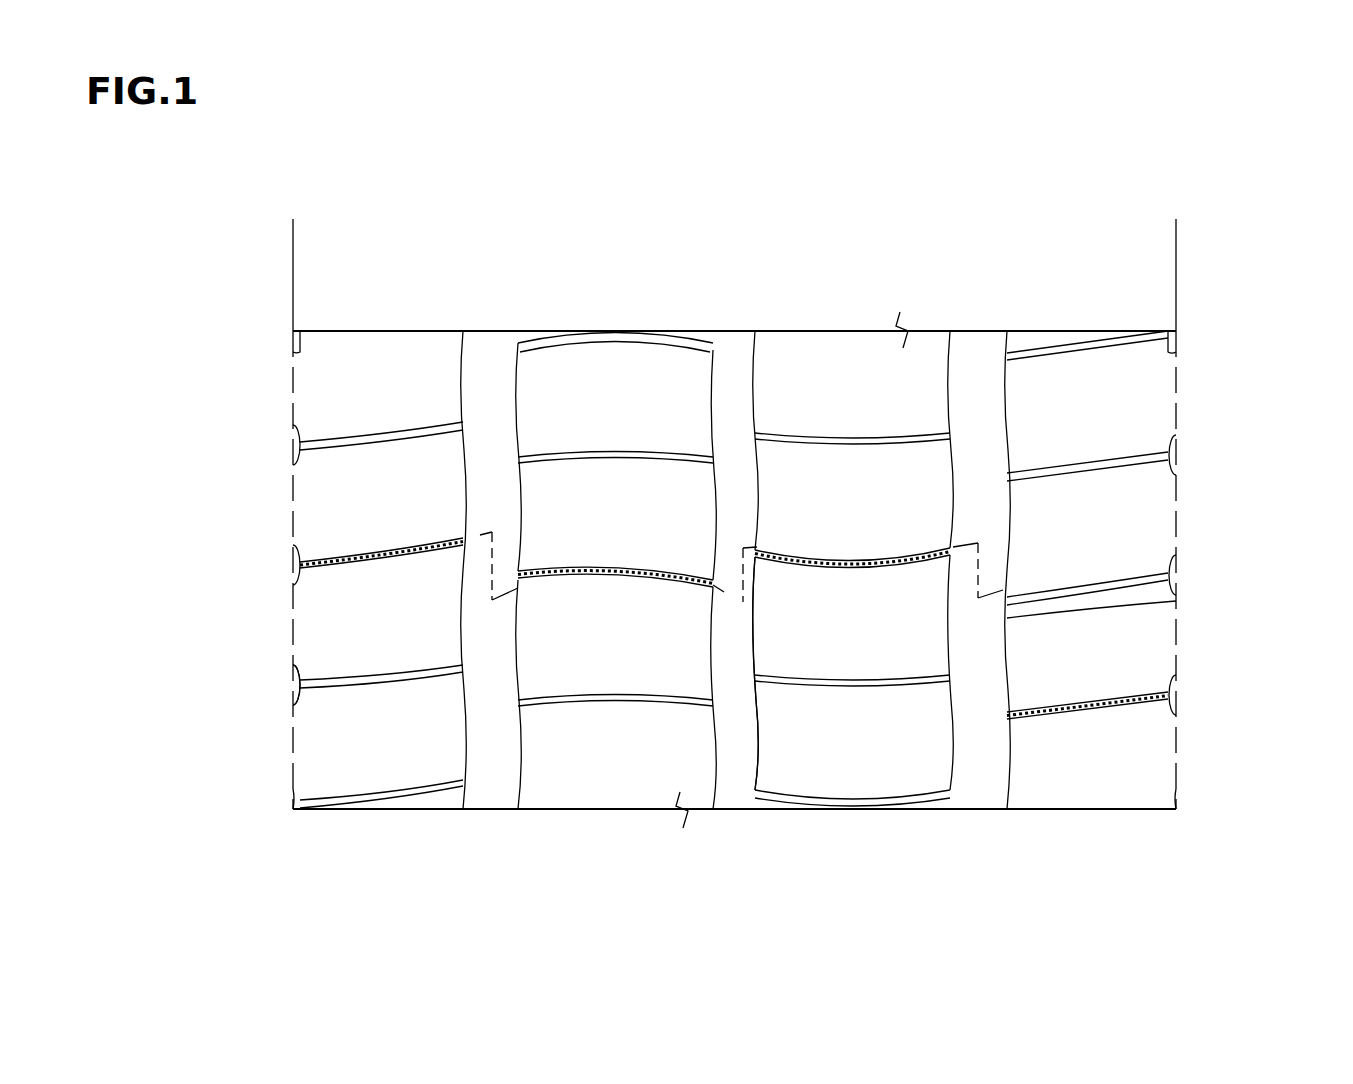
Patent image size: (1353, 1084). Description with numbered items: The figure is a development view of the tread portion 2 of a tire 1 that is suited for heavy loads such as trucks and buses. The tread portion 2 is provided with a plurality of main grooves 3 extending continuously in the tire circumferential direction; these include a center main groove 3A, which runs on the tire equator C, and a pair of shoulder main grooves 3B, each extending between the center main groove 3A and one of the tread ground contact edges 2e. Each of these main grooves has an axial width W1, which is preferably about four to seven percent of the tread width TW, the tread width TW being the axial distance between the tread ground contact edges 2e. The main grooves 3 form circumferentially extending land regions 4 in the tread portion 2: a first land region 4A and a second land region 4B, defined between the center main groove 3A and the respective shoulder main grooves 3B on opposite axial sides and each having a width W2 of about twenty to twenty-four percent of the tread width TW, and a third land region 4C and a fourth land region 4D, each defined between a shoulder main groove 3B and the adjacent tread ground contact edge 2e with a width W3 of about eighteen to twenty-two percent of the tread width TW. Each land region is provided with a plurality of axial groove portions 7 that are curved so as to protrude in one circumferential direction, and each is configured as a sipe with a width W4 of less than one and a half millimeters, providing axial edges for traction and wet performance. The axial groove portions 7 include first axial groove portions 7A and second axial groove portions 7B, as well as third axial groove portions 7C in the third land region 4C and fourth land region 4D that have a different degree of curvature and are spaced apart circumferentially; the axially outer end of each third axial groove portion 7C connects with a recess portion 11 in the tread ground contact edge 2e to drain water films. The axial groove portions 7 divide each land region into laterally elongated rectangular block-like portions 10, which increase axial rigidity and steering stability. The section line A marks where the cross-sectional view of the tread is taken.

The tire 1 is at (530, 322).
The tread portion 2 is at (790, 362).
The tread ground contact edges 2e is at (288, 357).
The main grooves 3 is at (733, 628).
The center main groove 3A is at (745, 772).
The shoulder main grooves 3B is at (490, 756).
The land regions 4 is at (738, 531).
The first land region 4A is at (607, 394).
The second land region 4B is at (853, 380).
The third land region 4C is at (378, 380).
The fourth land region 4D is at (1087, 374).
The axial groove portions 7 is at (190, 386).
The first axial groove portions 7A is at (580, 455).
The second axial groove portions 7B is at (603, 572).
The third axial groove portions 7C is at (378, 682).
The block-like portions 10 is at (855, 758).
The recess portions 11 is at (300, 690).
The tread width TW is at (293, 219).
The width of main groove W1 is at (1007, 331).
The width of first and second land regions W2 is at (713, 809).
The width of third and fourth land regions W3 is at (293, 809).
The width of axial groove portion W4 is at (1063, 668).
The tire equator C is at (734, 835).
The A-A line A is at (293, 564).